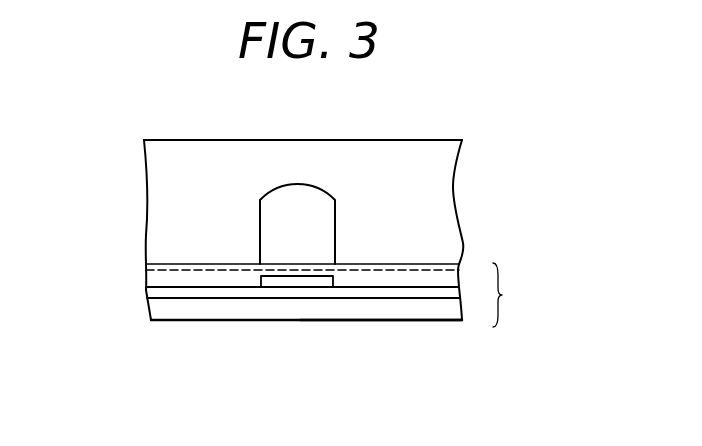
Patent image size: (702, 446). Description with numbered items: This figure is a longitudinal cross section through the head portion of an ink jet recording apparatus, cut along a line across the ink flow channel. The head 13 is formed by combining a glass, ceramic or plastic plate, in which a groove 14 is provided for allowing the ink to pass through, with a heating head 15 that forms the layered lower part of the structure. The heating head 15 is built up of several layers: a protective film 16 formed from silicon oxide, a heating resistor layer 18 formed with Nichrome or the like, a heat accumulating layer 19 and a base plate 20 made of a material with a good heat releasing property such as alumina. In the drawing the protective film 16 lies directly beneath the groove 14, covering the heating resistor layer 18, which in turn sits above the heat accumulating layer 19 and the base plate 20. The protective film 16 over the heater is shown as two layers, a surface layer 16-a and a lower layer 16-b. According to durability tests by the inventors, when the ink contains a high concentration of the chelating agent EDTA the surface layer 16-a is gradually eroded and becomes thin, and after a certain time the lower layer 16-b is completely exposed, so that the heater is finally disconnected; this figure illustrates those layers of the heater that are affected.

The head 13 is at (167, 138).
The groove 14 is at (303, 183).
The heating head 15 is at (510, 295).
The protective film 16 is at (340, 272).
The surface layer 16-a is at (146, 264).
The lower layer 16-b is at (146, 282).
The heating resistor layer 18 is at (320, 285).
The heat accumulating layer 19 is at (372, 294).
The base plate 20 is at (432, 322).